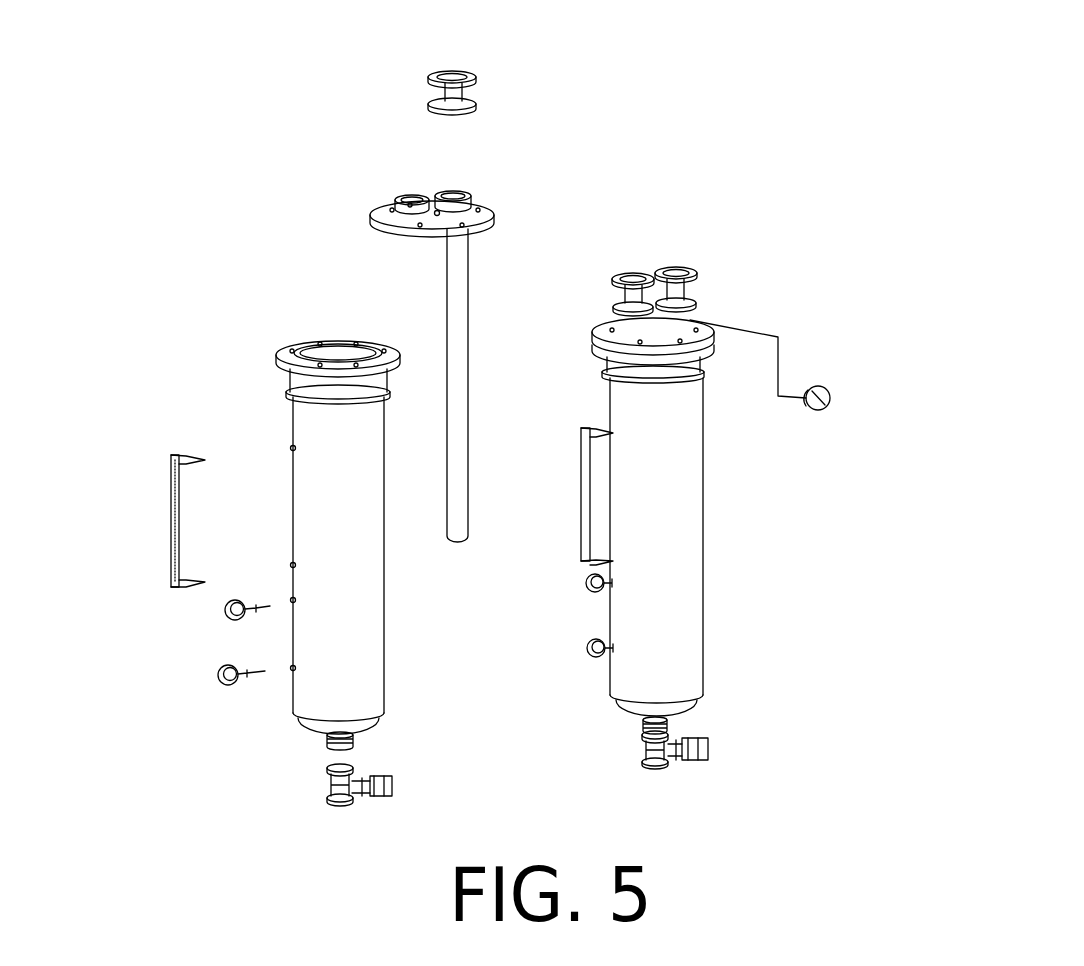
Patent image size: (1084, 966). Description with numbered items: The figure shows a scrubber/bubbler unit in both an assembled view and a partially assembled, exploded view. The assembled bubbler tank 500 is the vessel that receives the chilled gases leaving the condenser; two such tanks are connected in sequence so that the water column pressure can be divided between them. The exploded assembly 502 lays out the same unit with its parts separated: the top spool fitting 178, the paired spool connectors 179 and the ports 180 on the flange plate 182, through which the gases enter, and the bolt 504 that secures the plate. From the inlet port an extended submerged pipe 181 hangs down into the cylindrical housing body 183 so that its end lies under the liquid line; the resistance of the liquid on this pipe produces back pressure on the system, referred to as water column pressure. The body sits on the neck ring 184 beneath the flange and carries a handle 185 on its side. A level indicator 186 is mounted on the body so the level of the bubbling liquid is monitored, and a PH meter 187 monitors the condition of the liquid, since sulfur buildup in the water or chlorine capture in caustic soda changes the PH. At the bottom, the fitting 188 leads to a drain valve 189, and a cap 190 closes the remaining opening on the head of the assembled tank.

The spool connector 178 is at (455, 68).
The spool connectors 179 is at (690, 292).
The ports 180 is at (464, 195).
The submerged pipe 181 is at (460, 272).
The flange plate 182 is at (384, 213).
The cylindrical housing body 183 is at (343, 607).
The neck ring 184 is at (284, 443).
The handle 185 is at (171, 487).
The level indicator 186 is at (226, 612).
The PH meter 187 is at (222, 678).
The bottom fitting 188 is at (328, 742).
The valve 189 is at (323, 781).
The cap 190 is at (832, 388).
The bubbler tank 500 is at (686, 618).
The exploded housing assembly 502 is at (316, 843).
The bolt 504 is at (436, 208).